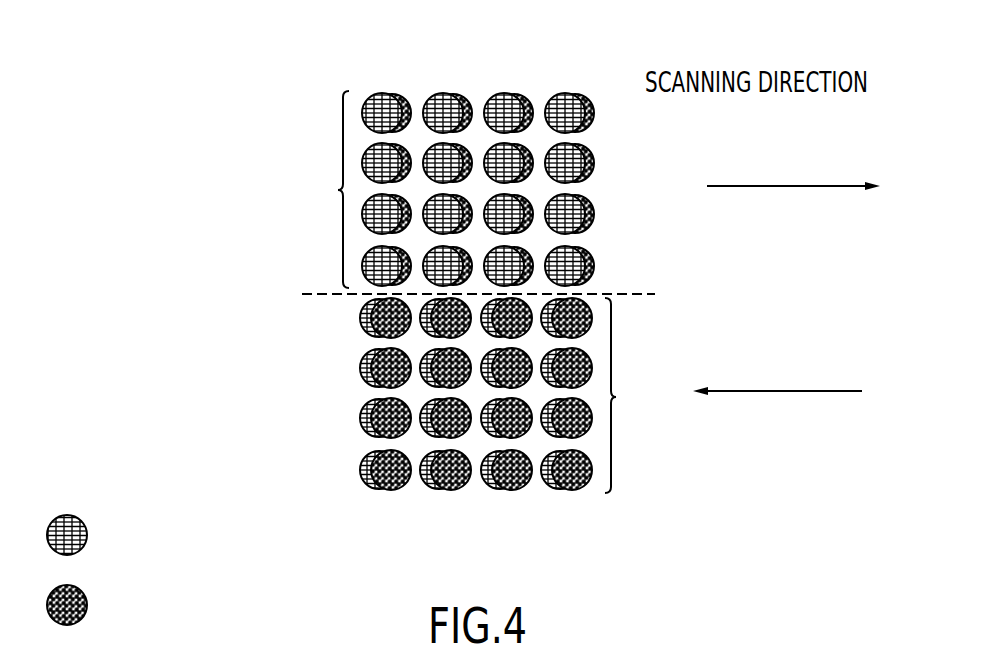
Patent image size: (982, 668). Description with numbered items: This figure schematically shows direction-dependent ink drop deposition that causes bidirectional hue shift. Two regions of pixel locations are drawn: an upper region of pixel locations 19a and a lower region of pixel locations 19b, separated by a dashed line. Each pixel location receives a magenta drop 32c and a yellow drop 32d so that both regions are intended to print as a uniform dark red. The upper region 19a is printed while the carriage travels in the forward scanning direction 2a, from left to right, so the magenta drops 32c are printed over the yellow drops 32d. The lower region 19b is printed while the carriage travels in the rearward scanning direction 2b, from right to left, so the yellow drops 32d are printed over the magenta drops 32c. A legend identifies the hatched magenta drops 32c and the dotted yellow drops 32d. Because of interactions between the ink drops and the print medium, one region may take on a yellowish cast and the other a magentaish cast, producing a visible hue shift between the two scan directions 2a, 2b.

The magenta drops 32c is at (87, 535).
The yellow drops 32d is at (87, 606).
The region of pixel locations 19a is at (444, 189).
The region of pixel locations 19b is at (506, 395).
The forward scanning direction 2a is at (790, 186).
The rearward scanning direction 2b is at (803, 391).